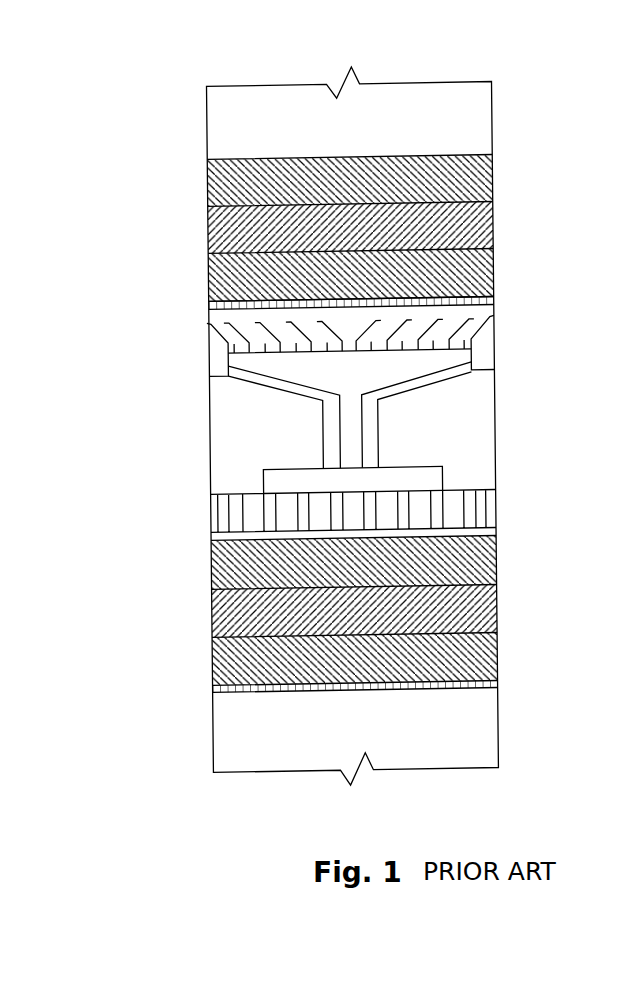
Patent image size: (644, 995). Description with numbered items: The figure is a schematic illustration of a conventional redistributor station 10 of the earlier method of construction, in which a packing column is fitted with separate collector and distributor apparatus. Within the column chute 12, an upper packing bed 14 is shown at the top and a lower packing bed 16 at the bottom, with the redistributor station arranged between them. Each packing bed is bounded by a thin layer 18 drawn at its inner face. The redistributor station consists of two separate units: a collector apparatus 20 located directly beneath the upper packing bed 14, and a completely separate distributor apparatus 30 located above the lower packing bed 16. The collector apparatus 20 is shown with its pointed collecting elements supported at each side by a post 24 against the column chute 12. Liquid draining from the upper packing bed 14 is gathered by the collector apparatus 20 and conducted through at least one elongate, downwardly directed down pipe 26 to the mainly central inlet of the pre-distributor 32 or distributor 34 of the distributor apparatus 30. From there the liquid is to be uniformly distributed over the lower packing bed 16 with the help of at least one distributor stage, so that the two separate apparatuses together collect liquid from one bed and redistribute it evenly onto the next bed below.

The redistributor station 10 is at (123, 301).
The column chute 12 is at (492, 128).
The upper packing bed 14 is at (492, 190).
The lower packing bed 16 is at (498, 598).
The electrode layer 18 is at (492, 290).
The collector apparatus 20 is at (352, 350).
The support post 24 is at (483, 355).
The down pipe 26 is at (407, 385).
The distributor apparatus 30 is at (353, 468).
The pre-distributor 32 is at (425, 473).
The distributor 34 is at (455, 512).